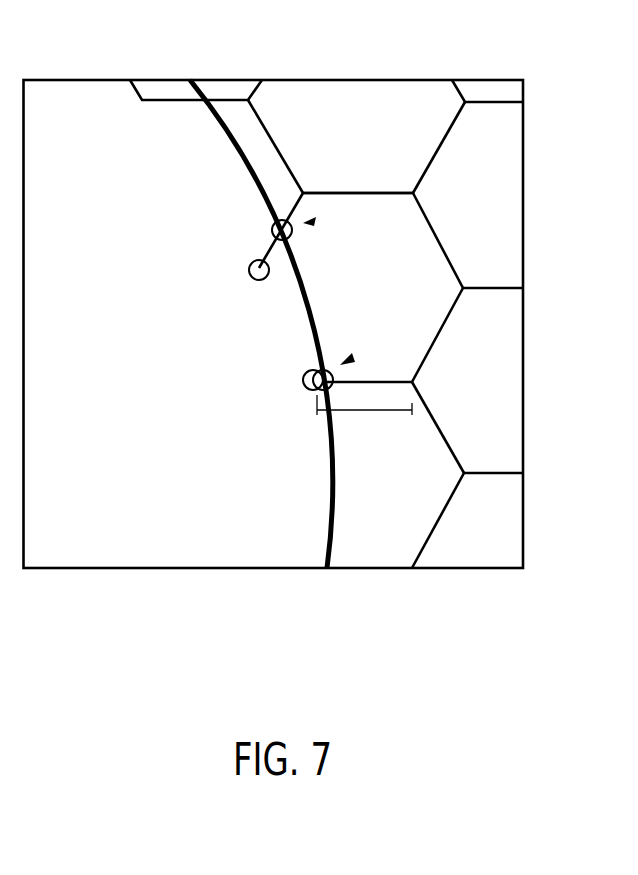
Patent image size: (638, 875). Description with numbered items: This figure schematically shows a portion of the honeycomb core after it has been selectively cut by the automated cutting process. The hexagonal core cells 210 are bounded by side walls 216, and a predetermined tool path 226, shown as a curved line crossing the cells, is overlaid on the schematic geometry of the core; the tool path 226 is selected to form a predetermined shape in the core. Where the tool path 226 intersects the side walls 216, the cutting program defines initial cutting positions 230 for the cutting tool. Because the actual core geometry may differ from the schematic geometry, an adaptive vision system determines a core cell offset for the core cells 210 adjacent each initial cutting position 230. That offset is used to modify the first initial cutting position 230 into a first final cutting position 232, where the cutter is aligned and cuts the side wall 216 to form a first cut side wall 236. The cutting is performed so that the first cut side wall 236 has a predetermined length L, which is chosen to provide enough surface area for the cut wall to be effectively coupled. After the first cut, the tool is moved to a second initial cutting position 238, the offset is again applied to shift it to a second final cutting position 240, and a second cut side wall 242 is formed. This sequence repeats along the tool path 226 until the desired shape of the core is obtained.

The predetermined tool path 226 is at (233, 134).
The side walls 216 is at (362, 195).
The second cut side wall 242 is at (330, 195).
The second final cutting position 240 is at (249, 271).
The second initial cutting position 238 is at (272, 226).
The first final cutting position 232 is at (303, 380).
The first cut side wall 236 is at (390, 381).
The initial cutting positions 230 is at (306, 222).
The core cells 210 is at (378, 300).
The predetermined length L is at (343, 412).